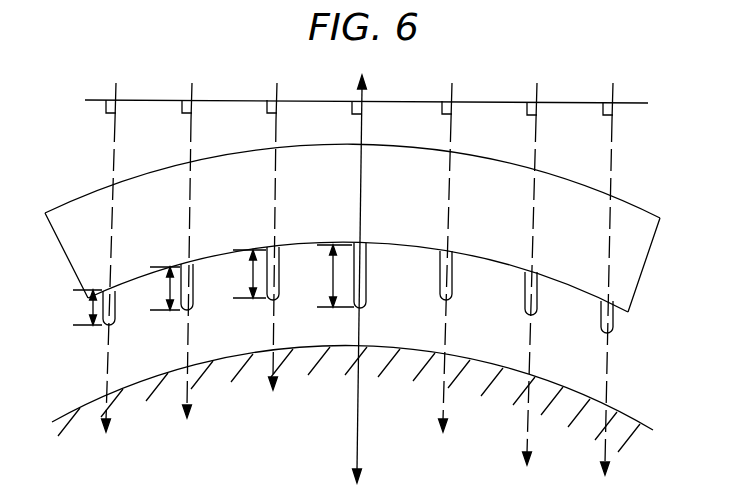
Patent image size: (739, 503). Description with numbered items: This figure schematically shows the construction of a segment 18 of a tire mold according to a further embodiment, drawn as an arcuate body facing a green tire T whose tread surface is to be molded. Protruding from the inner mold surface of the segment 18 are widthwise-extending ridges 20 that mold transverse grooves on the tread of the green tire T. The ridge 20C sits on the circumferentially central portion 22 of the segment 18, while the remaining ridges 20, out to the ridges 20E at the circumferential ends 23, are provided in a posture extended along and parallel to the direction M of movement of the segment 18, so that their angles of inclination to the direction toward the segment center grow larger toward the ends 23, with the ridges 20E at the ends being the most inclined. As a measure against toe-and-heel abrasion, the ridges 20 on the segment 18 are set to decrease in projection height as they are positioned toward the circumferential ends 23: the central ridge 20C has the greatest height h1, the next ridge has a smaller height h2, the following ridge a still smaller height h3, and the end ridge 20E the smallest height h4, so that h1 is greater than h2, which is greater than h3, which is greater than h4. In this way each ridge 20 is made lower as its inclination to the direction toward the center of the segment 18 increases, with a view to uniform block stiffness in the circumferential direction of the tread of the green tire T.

The segment 18 is at (237, 172).
The circumferentially central portion 22 is at (368, 160).
The circumferential ends 23 is at (88, 203).
The ridges 20 is at (613, 326).
The ridge on circumferentially central portion 20C is at (367, 280).
The ridges at the ends 20E is at (113, 318).
The green tire T is at (633, 412).
The direction of movement M is at (357, 455).
The projection height of central ridge h1 is at (330, 276).
The projection height of second ridge h2 is at (242, 274).
The projection height of third ridge h3 is at (159, 288).
The projection height of end ridge h4 is at (90, 316).